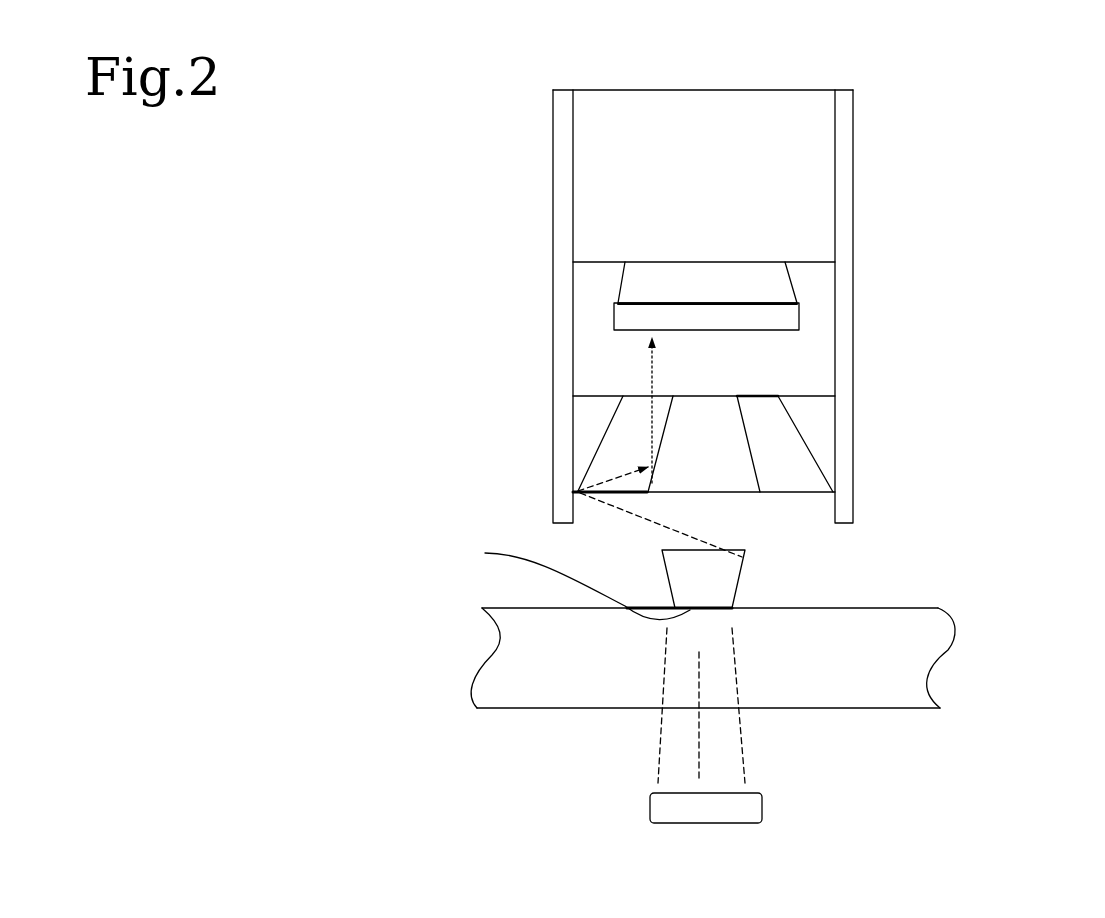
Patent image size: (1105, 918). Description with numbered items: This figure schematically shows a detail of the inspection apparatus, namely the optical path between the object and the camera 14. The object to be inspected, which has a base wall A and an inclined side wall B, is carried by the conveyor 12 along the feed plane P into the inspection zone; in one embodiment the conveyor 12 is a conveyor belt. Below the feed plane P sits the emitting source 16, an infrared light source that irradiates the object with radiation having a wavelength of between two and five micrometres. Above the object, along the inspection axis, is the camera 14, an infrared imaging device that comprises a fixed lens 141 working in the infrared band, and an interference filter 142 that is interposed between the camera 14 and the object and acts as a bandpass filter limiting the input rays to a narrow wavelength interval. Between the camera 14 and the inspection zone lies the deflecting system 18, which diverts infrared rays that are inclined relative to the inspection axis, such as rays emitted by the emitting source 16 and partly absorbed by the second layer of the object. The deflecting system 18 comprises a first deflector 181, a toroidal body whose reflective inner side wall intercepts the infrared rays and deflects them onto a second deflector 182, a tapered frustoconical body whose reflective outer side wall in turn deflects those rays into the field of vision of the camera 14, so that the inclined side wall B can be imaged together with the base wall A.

The camera 14 is at (769, 122).
The fixed lens 141 is at (757, 283).
The interference filter 142 is at (775, 315).
The deflecting system 18 is at (809, 415).
The second deflector 182 is at (722, 438).
The first deflector 181 is at (822, 443).
The base wall A is at (578, 583).
The side wall B is at (733, 578).
The conveyor 12 is at (913, 607).
The feed plane P is at (845, 612).
The emitting source 16 is at (763, 807).